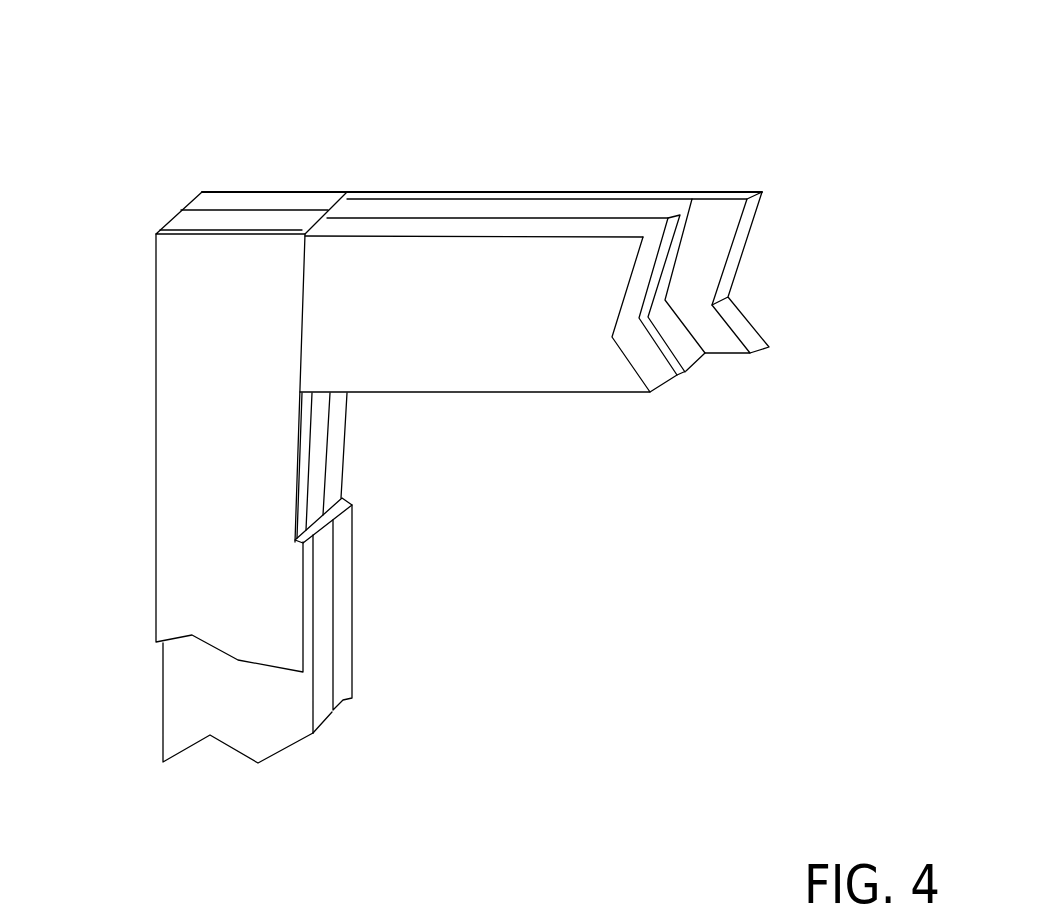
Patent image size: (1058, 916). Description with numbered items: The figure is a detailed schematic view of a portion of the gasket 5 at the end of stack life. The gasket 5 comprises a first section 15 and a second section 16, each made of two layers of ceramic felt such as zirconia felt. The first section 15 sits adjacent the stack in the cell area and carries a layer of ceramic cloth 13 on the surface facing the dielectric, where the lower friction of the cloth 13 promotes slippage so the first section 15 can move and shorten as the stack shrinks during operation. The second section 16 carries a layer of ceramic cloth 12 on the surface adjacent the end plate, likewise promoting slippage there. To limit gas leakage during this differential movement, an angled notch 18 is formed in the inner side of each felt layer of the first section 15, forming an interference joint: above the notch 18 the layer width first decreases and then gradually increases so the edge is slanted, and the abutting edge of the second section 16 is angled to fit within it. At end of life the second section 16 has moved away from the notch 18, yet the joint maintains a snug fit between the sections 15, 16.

The gasket 5 is at (483, 171).
The ceramic cloth 12 is at (713, 227).
The ceramic cloth 13 is at (193, 377).
The first section 15 is at (343, 543).
The second section 16 is at (565, 360).
The angled notch 18 is at (351, 497).